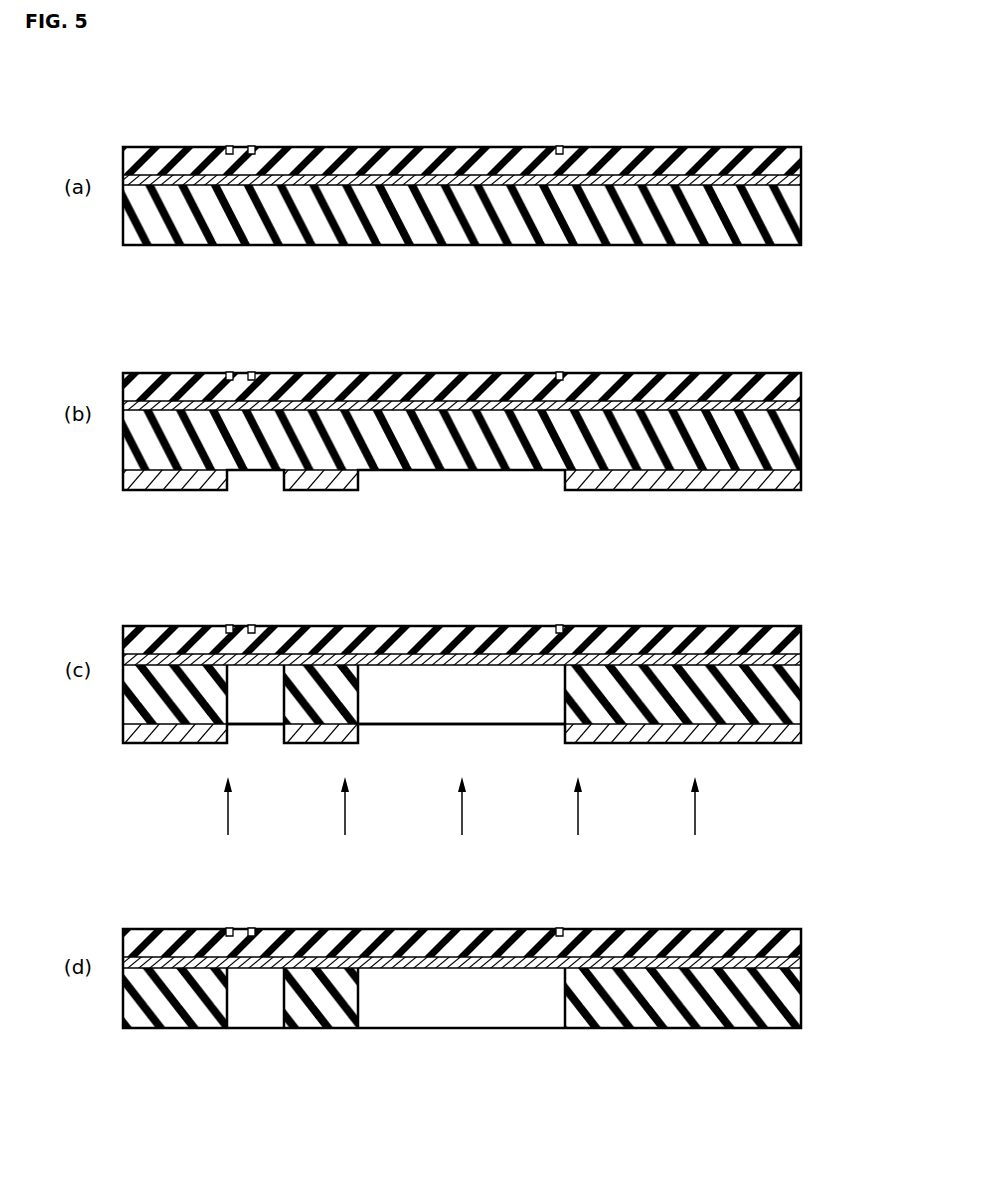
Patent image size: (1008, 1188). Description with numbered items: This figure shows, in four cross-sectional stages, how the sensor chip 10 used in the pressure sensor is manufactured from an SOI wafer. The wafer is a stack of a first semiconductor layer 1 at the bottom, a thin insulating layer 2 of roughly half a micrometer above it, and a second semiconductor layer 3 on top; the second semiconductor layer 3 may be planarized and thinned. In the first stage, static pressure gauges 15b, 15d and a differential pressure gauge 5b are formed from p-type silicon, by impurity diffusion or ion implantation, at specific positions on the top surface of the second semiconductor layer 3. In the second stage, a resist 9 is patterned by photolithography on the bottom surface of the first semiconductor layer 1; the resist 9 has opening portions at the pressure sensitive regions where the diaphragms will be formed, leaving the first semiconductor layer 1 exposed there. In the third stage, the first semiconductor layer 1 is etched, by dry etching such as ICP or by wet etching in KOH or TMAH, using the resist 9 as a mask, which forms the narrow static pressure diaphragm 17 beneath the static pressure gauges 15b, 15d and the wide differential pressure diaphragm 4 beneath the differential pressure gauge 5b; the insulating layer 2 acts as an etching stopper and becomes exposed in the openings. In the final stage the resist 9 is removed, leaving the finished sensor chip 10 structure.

The first semiconductor layer 1 is at (793, 228).
The insulating layer 2 is at (797, 180).
The second semiconductor layer 3 is at (793, 158).
The differential pressure diaphragm 4 is at (365, 615).
The differential pressure gauge 5b is at (560, 146).
The resist 9 is at (170, 486).
The sensor chip 10 is at (846, 147).
The static pressure gauge 15b is at (229, 146).
The static pressure gauge 15d is at (252, 146).
The static pressure diaphragm 17 is at (227, 615).